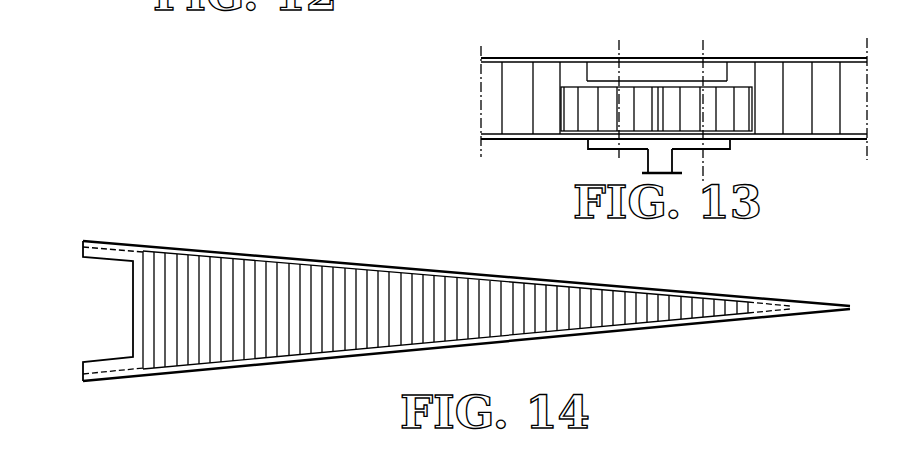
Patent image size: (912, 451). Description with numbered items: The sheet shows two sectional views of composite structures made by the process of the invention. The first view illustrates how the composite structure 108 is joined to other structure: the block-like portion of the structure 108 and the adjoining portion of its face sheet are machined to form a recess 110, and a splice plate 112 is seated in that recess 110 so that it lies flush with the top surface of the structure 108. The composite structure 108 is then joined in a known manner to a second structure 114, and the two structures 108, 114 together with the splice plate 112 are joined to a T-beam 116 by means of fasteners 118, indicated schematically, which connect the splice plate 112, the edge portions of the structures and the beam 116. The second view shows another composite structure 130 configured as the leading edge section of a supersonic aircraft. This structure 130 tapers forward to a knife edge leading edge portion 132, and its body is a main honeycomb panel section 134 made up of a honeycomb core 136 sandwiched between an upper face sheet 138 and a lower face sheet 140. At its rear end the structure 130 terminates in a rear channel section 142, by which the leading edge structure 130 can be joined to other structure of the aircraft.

In FIG. 13, the composite structure 108 is at (551, 47).
In FIG. 13, the recess 110 is at (590, 70).
In FIG. 13, the splice plate 112 is at (663, 63).
In FIG. 13, the second structure 114 is at (800, 44).
In FIG. 13, the T-beam 116 is at (663, 162).
In FIG. 13, the fasteners 118 is at (618, 156).
In FIG. 14, the composite structure 130 is at (442, 303).
In FIG. 14, the knife edge leading edge portion 132 is at (814, 304).
In FIG. 14, the main honeycomb panel section 134 is at (495, 277).
In FIG. 14, the honeycomb core 136 is at (334, 338).
In FIG. 14, the upper face sheet 138 is at (297, 258).
In FIG. 14, the lower face sheet 140 is at (265, 366).
In FIG. 14, the rear channel section 142 is at (107, 365).